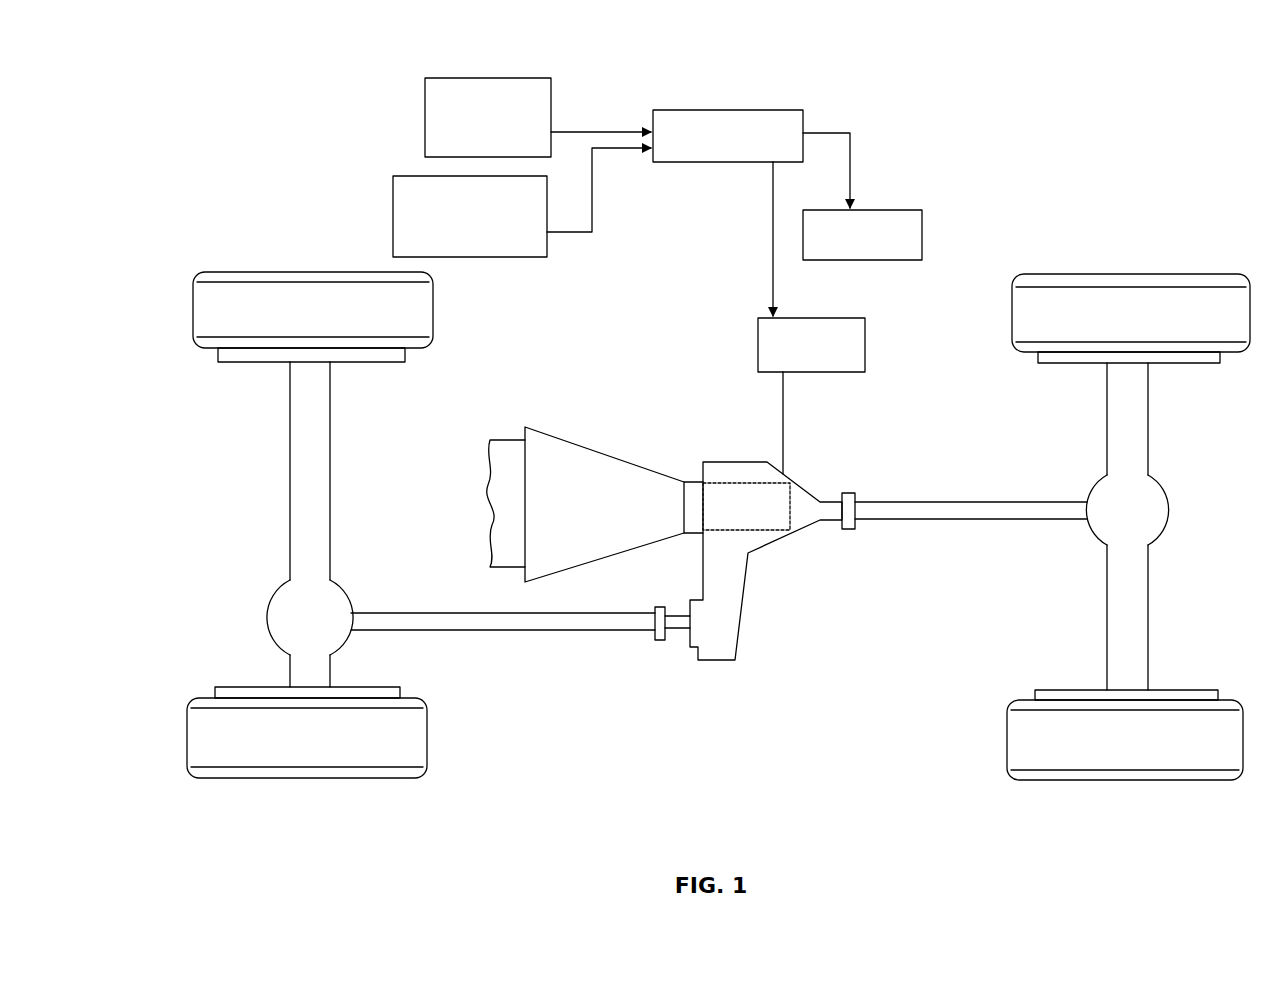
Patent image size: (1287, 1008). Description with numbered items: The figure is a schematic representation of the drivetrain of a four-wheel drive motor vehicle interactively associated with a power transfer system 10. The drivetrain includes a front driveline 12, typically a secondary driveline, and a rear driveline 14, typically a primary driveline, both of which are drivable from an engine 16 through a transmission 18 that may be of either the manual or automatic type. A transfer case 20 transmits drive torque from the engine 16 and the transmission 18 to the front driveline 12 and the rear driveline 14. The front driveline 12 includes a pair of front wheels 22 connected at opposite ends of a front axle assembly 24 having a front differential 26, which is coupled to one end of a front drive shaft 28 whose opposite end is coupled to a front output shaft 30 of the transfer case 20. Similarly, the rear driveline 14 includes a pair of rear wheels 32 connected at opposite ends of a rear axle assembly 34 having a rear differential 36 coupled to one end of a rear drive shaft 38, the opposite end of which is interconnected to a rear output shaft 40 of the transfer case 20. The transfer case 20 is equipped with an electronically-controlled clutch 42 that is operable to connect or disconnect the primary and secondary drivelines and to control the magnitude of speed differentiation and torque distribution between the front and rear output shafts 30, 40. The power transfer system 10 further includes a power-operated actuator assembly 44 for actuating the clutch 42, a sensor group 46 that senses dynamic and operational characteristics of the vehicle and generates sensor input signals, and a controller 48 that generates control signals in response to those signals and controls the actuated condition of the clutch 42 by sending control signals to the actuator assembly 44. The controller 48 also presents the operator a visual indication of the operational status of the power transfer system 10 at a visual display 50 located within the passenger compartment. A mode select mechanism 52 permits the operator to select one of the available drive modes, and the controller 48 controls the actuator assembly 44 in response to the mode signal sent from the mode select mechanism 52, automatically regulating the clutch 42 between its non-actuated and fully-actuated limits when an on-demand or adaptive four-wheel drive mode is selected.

The power transfer system 10 is at (872, 170).
The front driveline 12 is at (360, 530).
The rear driveline 14 is at (1010, 478).
The engine 16 is at (500, 515).
The transmission 18 is at (601, 525).
The transfer case 20 is at (777, 547).
The front wheels 22 is at (229, 297).
The front axle assembly 24 is at (305, 410).
The front differential 26 is at (276, 604).
The front drive shaft 28 is at (618, 628).
The front output shaft 30 is at (675, 632).
The rear wheels 32 is at (1135, 300).
The rear axle assembly 34 is at (1125, 405).
The rear differential 36 is at (1145, 522).
The rear drive shaft 38 is at (1000, 512).
The rear output shaft 40 is at (828, 503).
The electronically-controlled clutch 42 is at (748, 488).
The power-operated actuator assembly 44 is at (865, 325).
The sensor group 46 is at (425, 133).
The controller 48 is at (712, 110).
The visual display 50 is at (922, 222).
The mode select mechanism 52 is at (482, 257).